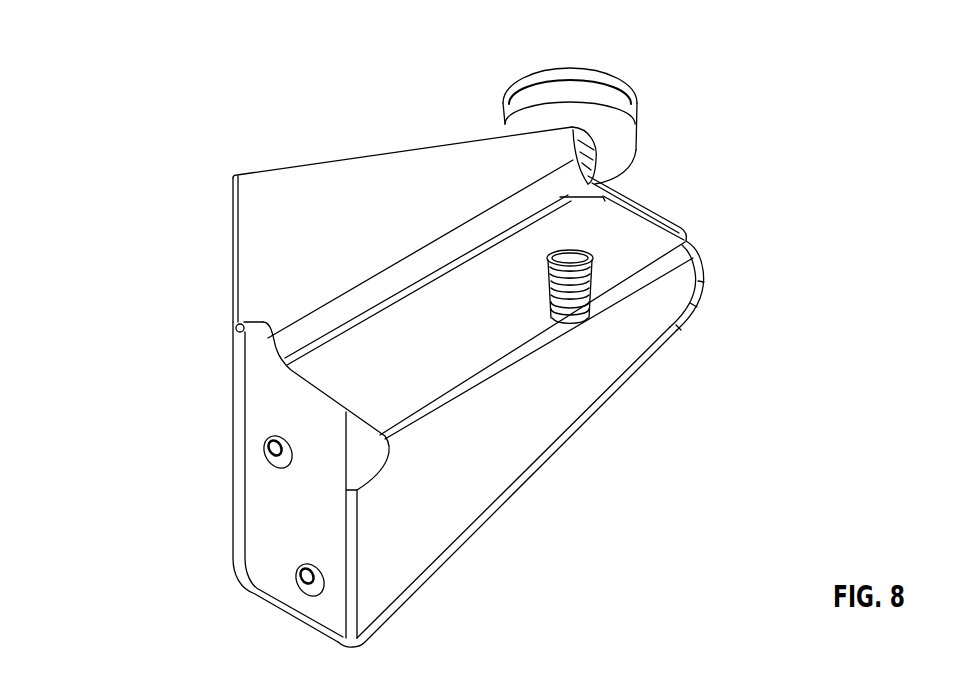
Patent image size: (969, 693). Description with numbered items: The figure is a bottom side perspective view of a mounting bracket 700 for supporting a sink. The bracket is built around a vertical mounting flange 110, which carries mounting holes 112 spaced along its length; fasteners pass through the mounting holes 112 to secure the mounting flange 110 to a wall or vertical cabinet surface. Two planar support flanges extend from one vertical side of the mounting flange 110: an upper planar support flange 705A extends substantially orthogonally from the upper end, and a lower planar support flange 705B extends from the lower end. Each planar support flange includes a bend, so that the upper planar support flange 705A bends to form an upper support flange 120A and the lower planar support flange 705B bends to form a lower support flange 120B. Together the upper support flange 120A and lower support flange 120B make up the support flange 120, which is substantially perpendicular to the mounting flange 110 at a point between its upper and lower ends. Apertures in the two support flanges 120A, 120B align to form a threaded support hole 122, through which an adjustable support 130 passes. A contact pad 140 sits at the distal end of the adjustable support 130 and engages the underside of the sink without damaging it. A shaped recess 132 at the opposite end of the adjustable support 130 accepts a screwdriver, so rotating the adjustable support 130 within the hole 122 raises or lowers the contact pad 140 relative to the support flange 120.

The mounting bracket 700 is at (100, 124).
The upper planar support flange 705A is at (433, 163).
The lower planar support flange 705B is at (538, 433).
The contact pad 140 is at (622, 101).
The support flange 120 is at (582, 286).
The upper support flange 120A is at (664, 217).
The lower support flange 120B is at (650, 243).
The support hole 122 is at (612, 270).
The adjustable support 130 is at (644, 328).
The shaped recess 132 is at (600, 345).
The mounting flange 110 is at (221, 482).
The mounting hole 112 is at (283, 575).